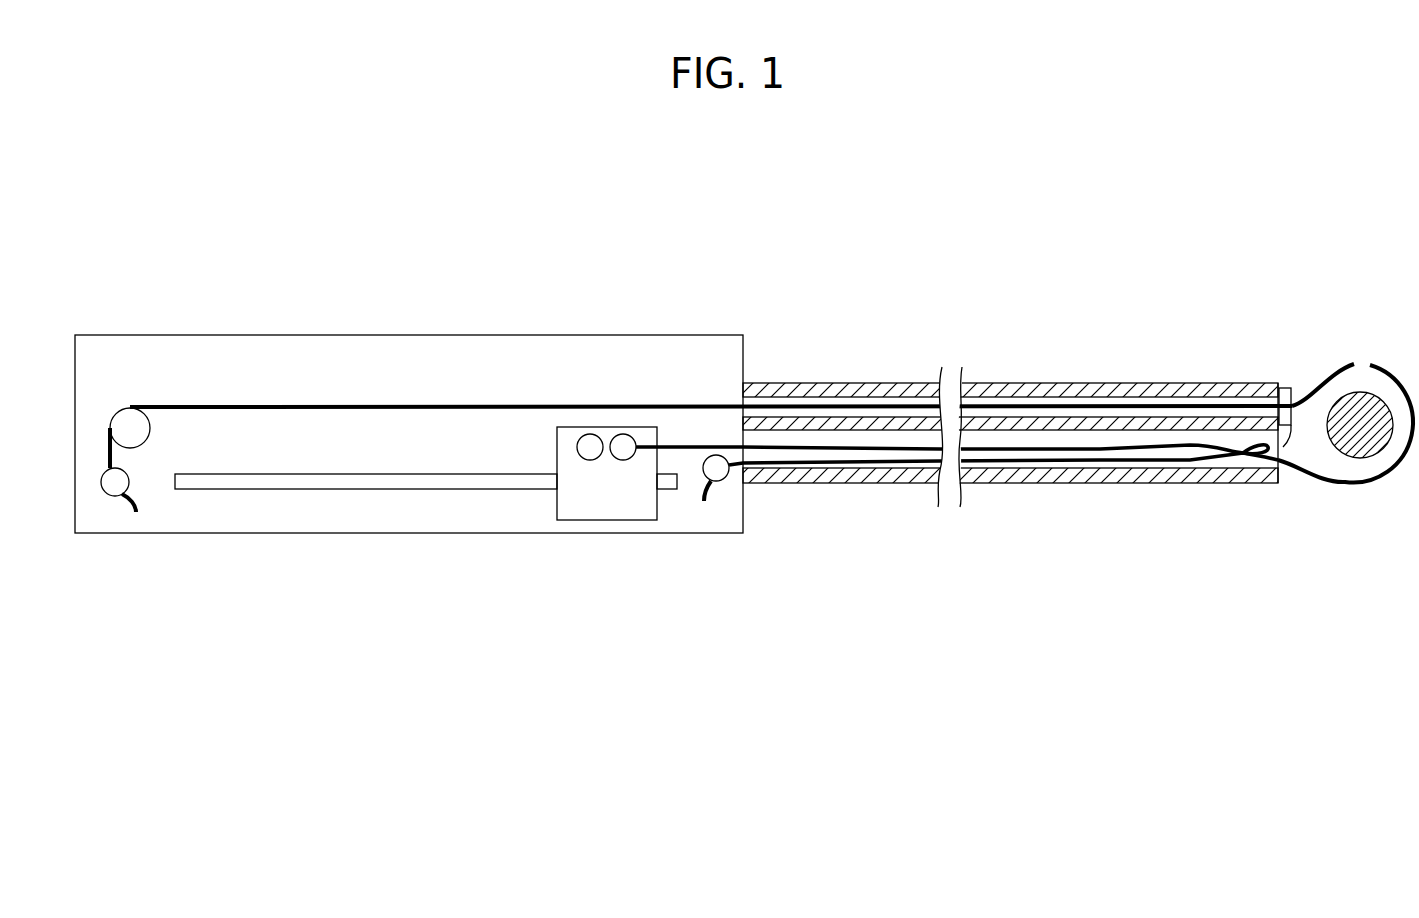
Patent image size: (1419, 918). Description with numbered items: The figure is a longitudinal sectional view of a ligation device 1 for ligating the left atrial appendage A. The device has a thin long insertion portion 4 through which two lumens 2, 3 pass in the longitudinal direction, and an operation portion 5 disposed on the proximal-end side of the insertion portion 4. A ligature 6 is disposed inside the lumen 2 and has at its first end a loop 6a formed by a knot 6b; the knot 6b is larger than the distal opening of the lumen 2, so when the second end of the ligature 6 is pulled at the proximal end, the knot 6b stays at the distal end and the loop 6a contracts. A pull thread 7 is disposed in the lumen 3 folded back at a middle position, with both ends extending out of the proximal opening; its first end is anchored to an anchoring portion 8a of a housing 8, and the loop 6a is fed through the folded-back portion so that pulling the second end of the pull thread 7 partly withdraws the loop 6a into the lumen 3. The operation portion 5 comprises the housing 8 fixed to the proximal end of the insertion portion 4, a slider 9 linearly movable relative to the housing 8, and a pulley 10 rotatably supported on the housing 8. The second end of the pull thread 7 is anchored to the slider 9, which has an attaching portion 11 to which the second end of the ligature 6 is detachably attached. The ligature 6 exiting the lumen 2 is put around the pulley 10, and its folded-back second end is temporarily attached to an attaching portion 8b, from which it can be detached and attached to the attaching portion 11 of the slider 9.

The ligation device 1 is at (948, 181).
The lumen 2 is at (1050, 396).
The lumen 3 is at (1068, 460).
The insertion portion 4 is at (1148, 344).
The operation portion 5 is at (518, 281).
The ligature 6 is at (835, 402).
The loop 6a is at (1350, 485).
The knot 6b is at (1288, 388).
The pull thread 7 is at (1198, 452).
The housing 8 is at (513, 535).
The anchoring portion 8a is at (724, 481).
The attaching portion (first attaching portion) 8b is at (110, 497).
The slider (movable member) 9 is at (605, 521).
The pulley 10 is at (150, 427).
The attaching portion (second attaching portion) 11 is at (577, 446).
The left atrial appendage A is at (1362, 392).